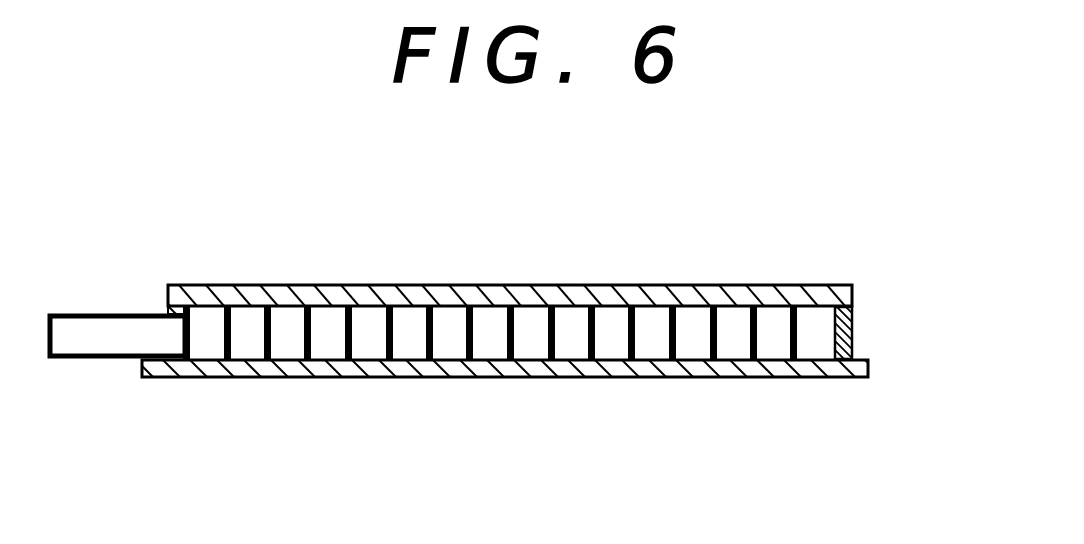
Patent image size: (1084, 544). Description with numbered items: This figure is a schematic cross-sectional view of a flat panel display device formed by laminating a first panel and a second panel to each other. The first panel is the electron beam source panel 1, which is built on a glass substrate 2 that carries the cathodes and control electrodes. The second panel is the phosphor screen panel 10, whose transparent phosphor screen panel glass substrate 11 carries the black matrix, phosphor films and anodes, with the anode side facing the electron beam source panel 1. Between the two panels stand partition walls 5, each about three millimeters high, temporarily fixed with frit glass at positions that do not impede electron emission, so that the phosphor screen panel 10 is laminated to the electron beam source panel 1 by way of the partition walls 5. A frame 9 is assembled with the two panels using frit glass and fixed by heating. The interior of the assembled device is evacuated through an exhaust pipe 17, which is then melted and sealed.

The electron beam source panel 1 is at (538, 336).
The substrate 2 is at (323, 379).
The partition walls 5 is at (514, 336).
The frame 9 is at (850, 334).
The phosphor screen panel 10 is at (538, 336).
The phosphor screen panel glass substrate 11 is at (410, 298).
The exhaust pipe 17 is at (100, 313).